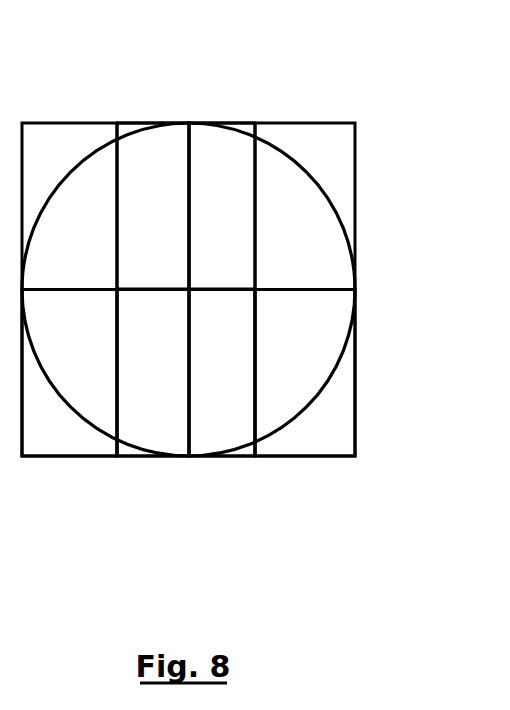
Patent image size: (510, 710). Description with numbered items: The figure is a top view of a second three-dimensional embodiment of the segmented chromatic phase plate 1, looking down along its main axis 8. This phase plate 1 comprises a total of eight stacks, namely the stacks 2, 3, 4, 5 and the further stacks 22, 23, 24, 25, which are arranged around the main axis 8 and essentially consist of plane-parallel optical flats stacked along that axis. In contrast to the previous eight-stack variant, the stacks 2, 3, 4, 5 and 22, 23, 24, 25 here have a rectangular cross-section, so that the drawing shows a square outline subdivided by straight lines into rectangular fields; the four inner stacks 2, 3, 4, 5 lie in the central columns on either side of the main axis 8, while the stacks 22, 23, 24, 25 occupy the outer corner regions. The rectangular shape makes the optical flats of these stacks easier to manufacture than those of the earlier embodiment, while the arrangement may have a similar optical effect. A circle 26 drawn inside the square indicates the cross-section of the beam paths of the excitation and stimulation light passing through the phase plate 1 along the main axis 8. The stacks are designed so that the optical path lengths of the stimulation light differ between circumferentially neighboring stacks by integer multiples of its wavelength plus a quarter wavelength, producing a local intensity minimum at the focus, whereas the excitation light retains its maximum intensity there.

The phase plate 1 is at (400, 110).
The stack 2 is at (149, 165).
The stack 3 is at (218, 170).
The stack 4 is at (219, 410).
The stack 5 is at (150, 407).
The main axis 8 is at (190, 289).
The stack 22 is at (62, 148).
The stack 23 is at (312, 148).
The stack 24 is at (313, 432).
The stack 25 is at (68, 437).
The circle 26 is at (340, 354).